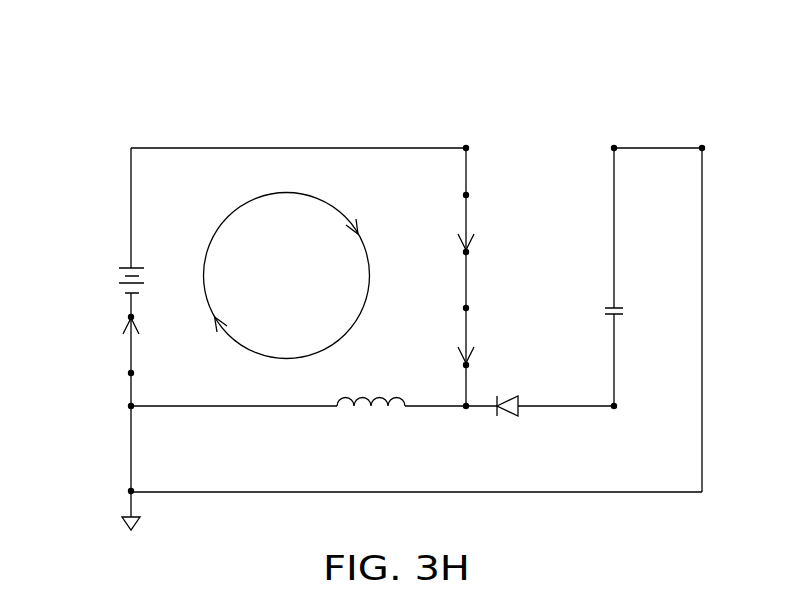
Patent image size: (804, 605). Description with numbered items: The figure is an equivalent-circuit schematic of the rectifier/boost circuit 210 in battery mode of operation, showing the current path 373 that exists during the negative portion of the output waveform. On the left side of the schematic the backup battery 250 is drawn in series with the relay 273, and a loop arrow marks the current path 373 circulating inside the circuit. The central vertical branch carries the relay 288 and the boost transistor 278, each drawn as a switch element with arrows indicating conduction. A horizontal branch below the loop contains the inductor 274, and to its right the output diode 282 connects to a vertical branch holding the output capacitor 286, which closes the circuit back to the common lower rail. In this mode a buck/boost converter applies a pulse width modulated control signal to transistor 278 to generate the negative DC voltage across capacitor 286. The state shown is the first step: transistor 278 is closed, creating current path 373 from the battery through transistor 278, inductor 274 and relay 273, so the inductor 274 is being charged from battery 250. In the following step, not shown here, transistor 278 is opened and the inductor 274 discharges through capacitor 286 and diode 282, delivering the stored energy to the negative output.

The rectifier/boost circuit 210 is at (600, 112).
The backup battery 250 is at (117, 280).
The relay 273 is at (130, 352).
The current path 373 is at (335, 208).
The relay 288 is at (467, 225).
The boost transistor 278 is at (467, 338).
The inductor 274 is at (362, 402).
The output diode 282 is at (506, 416).
The output capacitor 286 is at (618, 317).